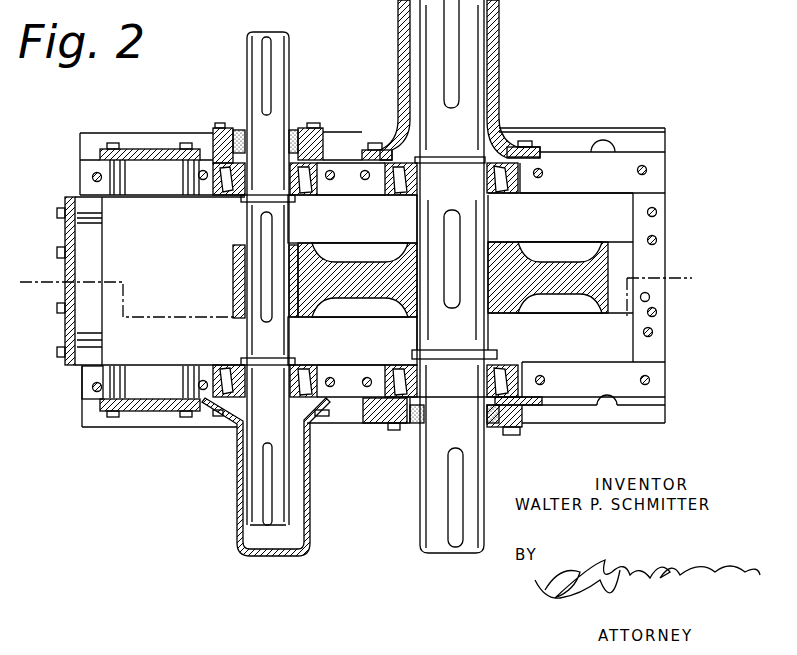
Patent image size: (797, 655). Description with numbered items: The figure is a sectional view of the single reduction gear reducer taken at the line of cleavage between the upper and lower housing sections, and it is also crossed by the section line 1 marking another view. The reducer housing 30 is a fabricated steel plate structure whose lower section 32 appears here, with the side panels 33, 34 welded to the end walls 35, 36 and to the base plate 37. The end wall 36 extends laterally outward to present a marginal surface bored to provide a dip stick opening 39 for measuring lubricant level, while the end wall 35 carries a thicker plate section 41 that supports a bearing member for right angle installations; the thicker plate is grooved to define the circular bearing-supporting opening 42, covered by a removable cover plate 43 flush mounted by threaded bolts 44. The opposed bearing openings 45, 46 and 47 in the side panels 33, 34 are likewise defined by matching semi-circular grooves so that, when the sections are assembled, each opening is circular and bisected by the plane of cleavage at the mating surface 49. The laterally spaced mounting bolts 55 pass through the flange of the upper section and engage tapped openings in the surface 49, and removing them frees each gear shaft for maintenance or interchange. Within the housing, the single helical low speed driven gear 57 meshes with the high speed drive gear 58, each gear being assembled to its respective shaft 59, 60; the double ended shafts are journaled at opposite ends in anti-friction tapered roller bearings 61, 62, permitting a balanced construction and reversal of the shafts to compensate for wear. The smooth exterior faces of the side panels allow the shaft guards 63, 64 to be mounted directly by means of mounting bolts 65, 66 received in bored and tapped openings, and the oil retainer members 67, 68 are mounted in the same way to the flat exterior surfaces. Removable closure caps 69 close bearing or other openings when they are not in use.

The section line 1- 1 is at (12, 295).
The reducer housing 30 is at (65, 198).
The lower section 32 is at (624, 146).
The side panel 33 is at (82, 163).
The side panel 34 is at (83, 380).
The end wall 35 is at (82, 367).
The end wall 36 is at (655, 347).
The base plate 37 is at (605, 202).
The dip stick opening 39 is at (640, 305).
The thicker plate section 41 is at (85, 202).
The bearing-supporting opening 42 is at (65, 233).
The cover plate 43 is at (65, 295).
The cover bolt 44 is at (65, 345).
The bearing opening 45 is at (125, 192).
The bearing opening 46 is at (224, 193).
The bearing opening 47 is at (388, 196).
The mating surface 49 is at (570, 168).
The mounting bolts 55 is at (92, 177).
The low speed driven gear 57 is at (310, 258).
The high speed drive gear 58 is at (233, 289).
The gear shaft 59 is at (434, 330).
The gear shaft 60 is at (258, 326).
The tapered roller bearing 61 is at (504, 183).
The tapered roller bearing 62 is at (302, 197).
The shaft guard 63 is at (499, 118).
The shaft guard 64 is at (237, 495).
The mounting bolts 65 is at (375, 148).
The mounting bolts 66 is at (219, 123).
The oil retainer member 67 is at (213, 130).
The oil retainer member 68 is at (525, 425).
The removable closure cap 69 is at (135, 150).